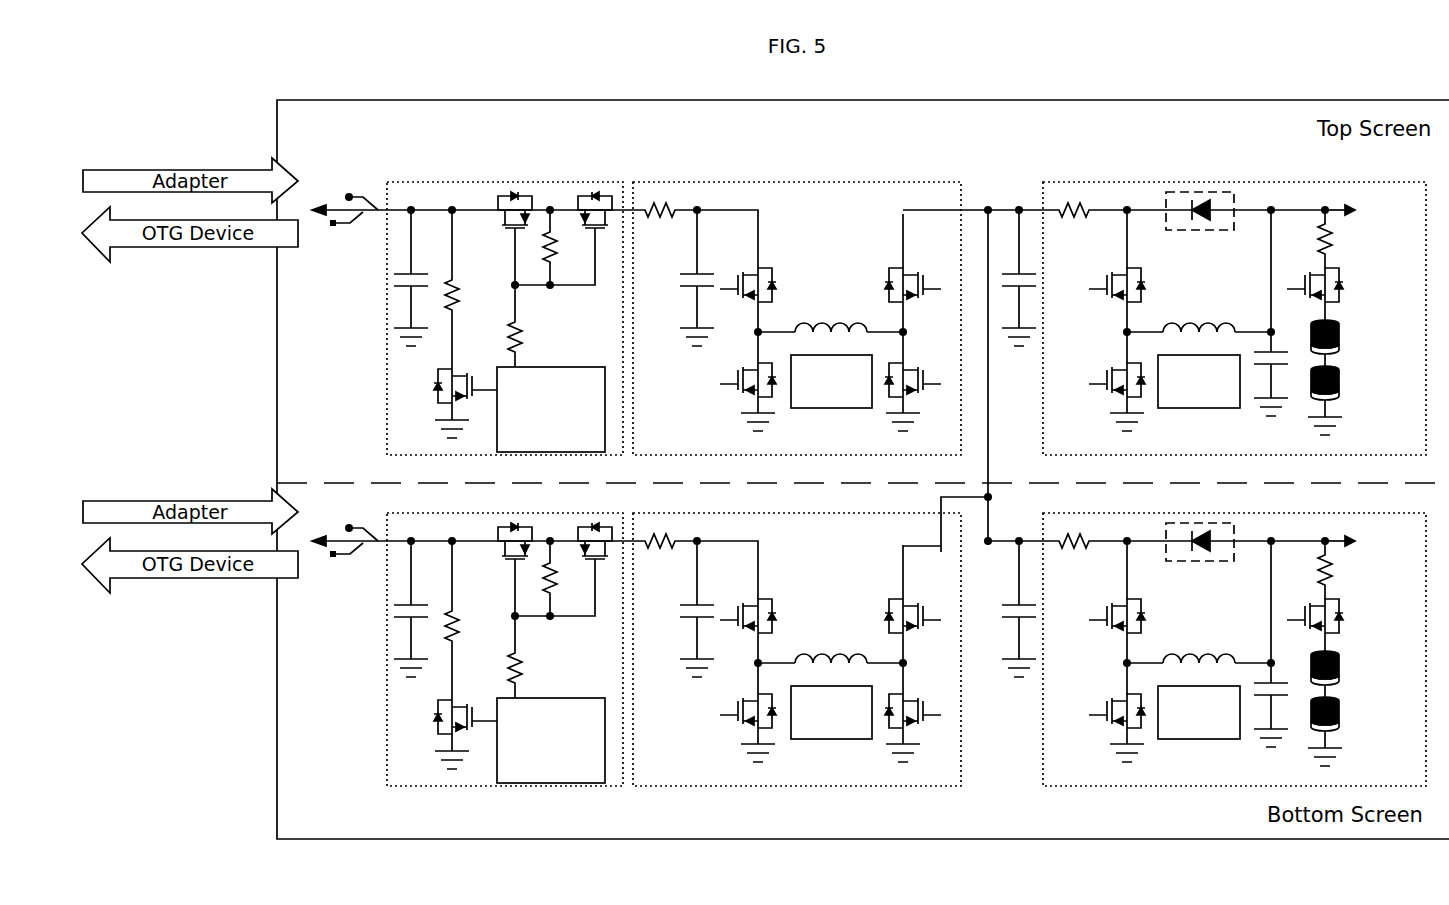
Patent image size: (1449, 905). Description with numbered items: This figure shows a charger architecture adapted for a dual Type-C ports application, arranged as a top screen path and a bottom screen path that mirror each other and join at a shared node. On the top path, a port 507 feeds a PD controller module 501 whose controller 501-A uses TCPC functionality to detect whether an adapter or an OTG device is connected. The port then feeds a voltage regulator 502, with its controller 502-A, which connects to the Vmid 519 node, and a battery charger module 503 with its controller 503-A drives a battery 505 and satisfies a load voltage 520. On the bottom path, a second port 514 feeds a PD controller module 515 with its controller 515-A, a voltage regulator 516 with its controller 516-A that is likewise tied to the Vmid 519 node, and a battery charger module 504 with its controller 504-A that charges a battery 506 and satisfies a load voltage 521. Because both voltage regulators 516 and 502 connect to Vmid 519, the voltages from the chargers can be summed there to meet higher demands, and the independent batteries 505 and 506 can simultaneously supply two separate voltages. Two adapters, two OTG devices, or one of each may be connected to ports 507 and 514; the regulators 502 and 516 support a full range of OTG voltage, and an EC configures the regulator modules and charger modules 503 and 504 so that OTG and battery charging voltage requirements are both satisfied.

The PD controller module 501 is at (505, 306).
The controller 501-A is at (551, 409).
The voltage regulator 502 is at (797, 306).
The voltage regulator controller 502-A is at (831, 381).
The battery charger module 503 is at (1234, 306).
The battery charger controller 503-A is at (1199, 381).
The battery charger module 504 is at (1234, 636).
The battery charger controller 504-A is at (1199, 712).
The battery 505 is at (1354, 377).
The battery 506 is at (1354, 708).
The port 507 is at (353, 198).
The port 514 is at (355, 527).
The PD controller module 515 is at (505, 637).
The controller 515-A is at (551, 740).
The voltage regulator 516 is at (797, 637).
The voltage regulator controller 516-A is at (831, 712).
The Vmid node 519 is at (969, 427).
The load voltage 520 is at (1366, 210).
The load voltage 521 is at (1366, 541).